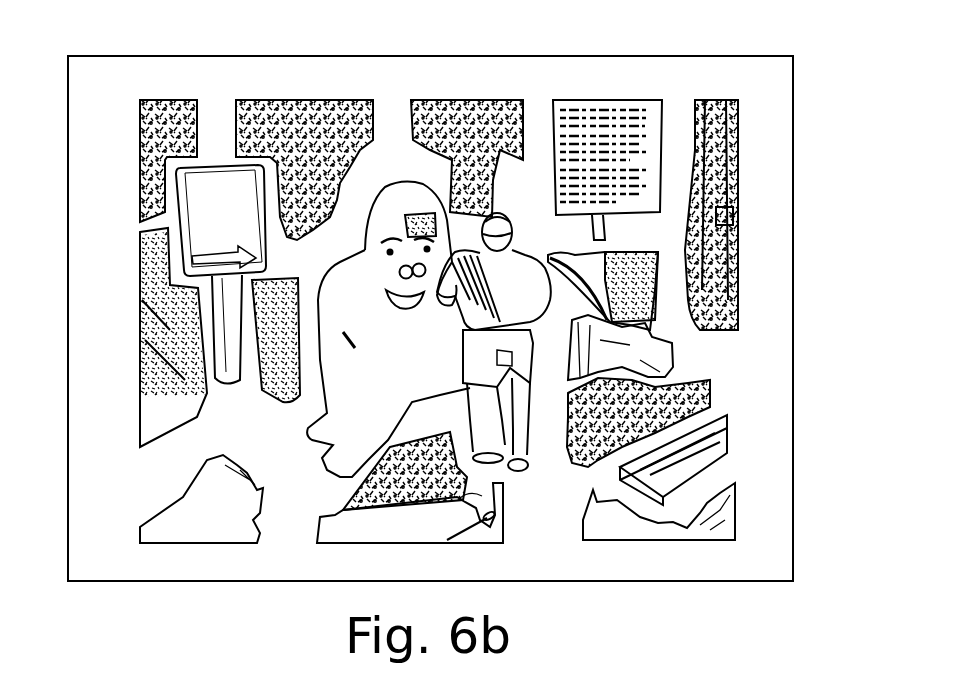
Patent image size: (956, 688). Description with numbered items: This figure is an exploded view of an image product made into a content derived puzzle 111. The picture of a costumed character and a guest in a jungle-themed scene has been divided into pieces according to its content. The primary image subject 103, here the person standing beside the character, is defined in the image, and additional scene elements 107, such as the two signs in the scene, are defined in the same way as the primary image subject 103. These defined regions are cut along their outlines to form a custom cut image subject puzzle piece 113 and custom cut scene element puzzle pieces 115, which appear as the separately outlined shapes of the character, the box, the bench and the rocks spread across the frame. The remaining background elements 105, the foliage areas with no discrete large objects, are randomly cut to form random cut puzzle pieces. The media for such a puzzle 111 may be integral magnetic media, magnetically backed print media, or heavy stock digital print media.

The image subject 103 is at (508, 256).
The background elements 105 is at (143, 117).
The additional scene elements 107 is at (240, 182).
The puzzle 111 is at (745, 75).
The custom cut image subject puzzle piece 113 is at (508, 358).
The custom cut scene element puzzle pieces 115 is at (735, 212).